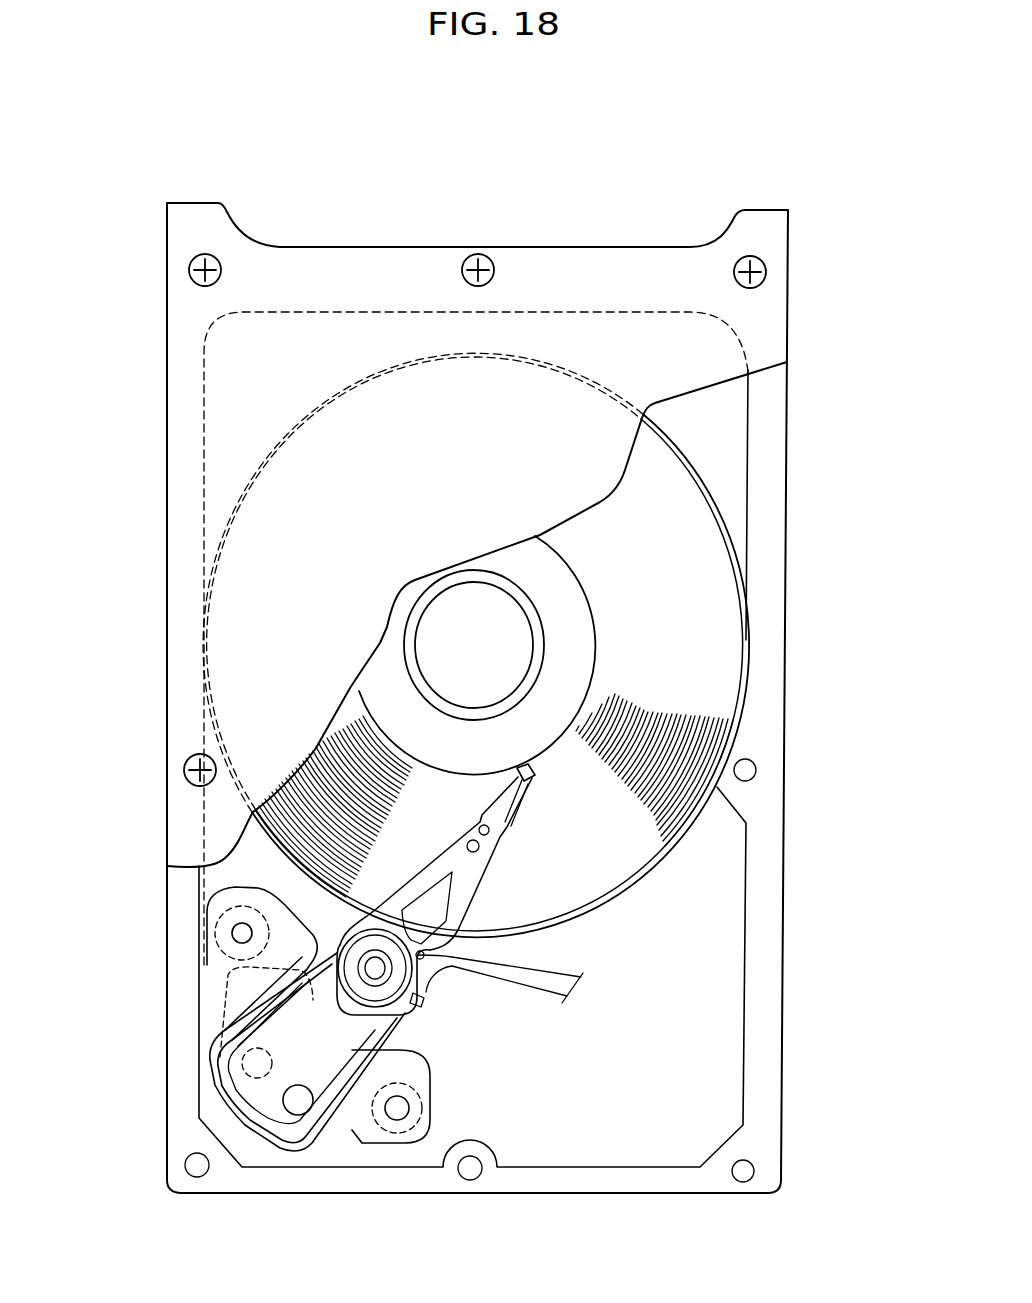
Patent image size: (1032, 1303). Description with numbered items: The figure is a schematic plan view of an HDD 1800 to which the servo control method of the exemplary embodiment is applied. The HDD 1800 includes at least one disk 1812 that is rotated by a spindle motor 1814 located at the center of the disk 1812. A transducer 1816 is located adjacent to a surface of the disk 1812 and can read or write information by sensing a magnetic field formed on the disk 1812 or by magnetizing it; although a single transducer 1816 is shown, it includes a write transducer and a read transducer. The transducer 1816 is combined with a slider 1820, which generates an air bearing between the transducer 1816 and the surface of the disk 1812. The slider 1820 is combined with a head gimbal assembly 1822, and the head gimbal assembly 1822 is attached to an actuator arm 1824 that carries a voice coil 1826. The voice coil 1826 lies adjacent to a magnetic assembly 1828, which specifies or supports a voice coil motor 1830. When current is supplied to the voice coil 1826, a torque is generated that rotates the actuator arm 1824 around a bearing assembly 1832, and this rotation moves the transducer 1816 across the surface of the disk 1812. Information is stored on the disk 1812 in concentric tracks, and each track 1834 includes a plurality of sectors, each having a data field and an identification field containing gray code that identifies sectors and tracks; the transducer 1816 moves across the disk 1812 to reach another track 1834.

The HDD 1800 is at (563, 186).
The disk 1812 is at (705, 585).
The spindle motor 1814 is at (452, 622).
The transducer 1816 is at (530, 772).
The slider 1820 is at (515, 793).
The head gimbal assembly 1822 is at (471, 889).
The actuator arm 1824 is at (300, 958).
The voice coil 1826 is at (228, 1053).
The magnetic assembly 1828 is at (238, 998).
The voice coil motor 1830 is at (345, 1125).
The bearing assembly 1832 is at (380, 980).
The track 1834 is at (345, 772).